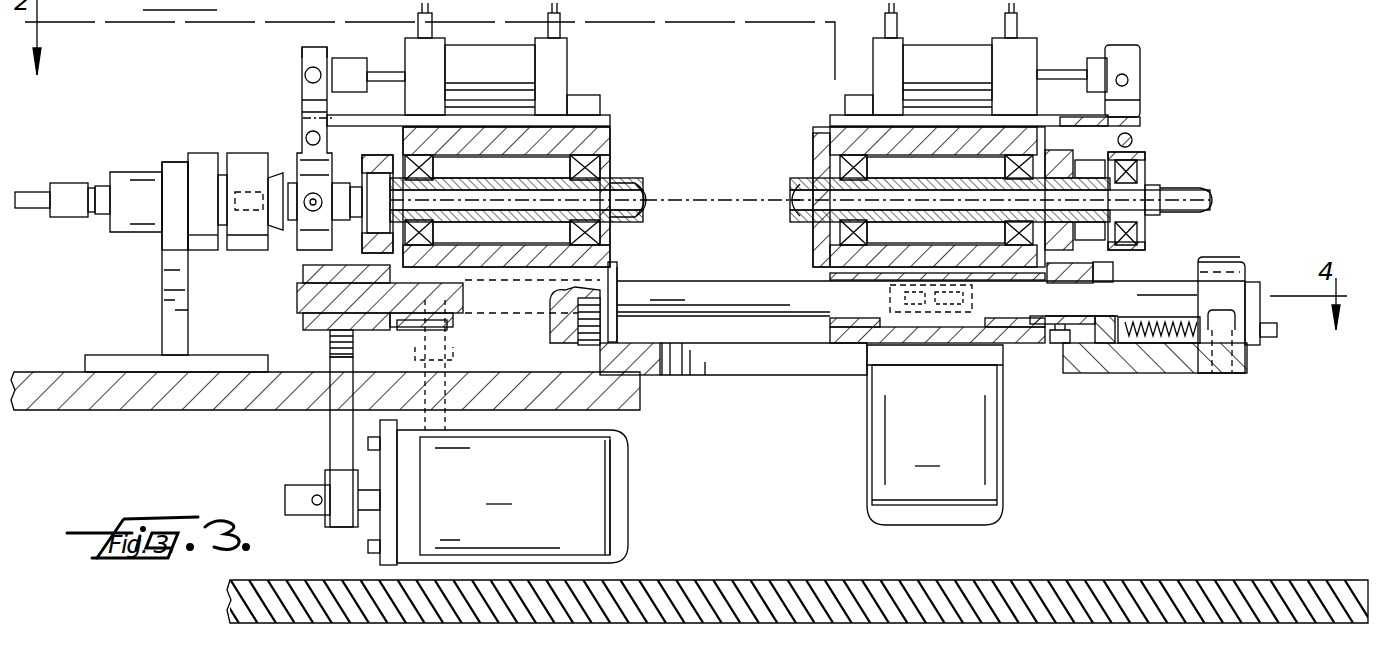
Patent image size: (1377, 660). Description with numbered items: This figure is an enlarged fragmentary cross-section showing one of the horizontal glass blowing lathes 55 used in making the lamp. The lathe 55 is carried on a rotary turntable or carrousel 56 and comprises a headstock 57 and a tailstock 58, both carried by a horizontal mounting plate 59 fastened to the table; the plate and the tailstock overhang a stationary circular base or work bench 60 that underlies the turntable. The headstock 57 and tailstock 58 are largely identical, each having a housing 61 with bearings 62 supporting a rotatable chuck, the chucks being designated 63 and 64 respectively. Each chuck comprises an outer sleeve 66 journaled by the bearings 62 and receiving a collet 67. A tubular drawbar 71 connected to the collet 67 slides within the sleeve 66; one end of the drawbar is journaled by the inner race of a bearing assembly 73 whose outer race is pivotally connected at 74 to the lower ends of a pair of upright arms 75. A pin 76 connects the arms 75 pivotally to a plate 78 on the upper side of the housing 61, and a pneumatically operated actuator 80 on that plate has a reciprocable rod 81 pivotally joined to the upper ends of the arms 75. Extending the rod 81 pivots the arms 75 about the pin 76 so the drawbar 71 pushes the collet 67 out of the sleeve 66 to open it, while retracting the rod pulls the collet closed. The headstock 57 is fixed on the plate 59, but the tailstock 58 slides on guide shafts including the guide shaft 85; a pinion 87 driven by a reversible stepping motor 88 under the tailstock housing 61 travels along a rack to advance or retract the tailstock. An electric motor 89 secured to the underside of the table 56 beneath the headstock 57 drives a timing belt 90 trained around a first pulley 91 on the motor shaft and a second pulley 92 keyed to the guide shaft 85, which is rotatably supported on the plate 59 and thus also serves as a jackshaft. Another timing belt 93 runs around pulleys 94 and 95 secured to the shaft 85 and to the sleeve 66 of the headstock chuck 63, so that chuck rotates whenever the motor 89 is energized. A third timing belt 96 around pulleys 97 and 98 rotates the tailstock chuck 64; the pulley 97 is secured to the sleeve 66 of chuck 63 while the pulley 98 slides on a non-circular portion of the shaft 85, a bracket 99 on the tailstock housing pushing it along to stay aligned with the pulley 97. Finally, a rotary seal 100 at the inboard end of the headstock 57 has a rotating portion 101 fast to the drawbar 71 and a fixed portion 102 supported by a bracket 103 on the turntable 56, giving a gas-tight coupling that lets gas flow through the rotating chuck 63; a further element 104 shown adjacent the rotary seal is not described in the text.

The horizontal glass blowing lathe 55 is at (1166, 60).
The rotary turntable 56 is at (118, 412).
The headstock 57 is at (620, 116).
The tailstock 58 is at (824, 130).
The mounting plate 59 is at (660, 378).
The work bench 60 is at (692, 583).
The housing 61 is at (548, 130).
The bearings 62 is at (420, 155).
The chuck of the headstock 63 is at (490, 160).
The chuck of the tailstock 64 is at (957, 165).
The outer sleeve 66 is at (530, 228).
The collet 67 is at (646, 195).
The tubular drawbar 71 is at (480, 228).
The bearing assembly 73 is at (300, 238).
The pivotal connection 74 is at (311, 194).
The upright arms 75 is at (298, 85).
The pin 76 is at (305, 134).
The plate 78 is at (377, 115).
The pneumatically operated actuator 80 is at (485, 45).
The reciprocable rod 81 is at (392, 62).
The guide shaft 85 is at (688, 290).
The pinion 87 is at (955, 314).
The reversible stepping motor 88 is at (935, 435).
The electric motor 89 is at (498, 492).
The timing belt 90 is at (330, 442).
The first pulley 91 is at (325, 482).
The second pulley 92 is at (303, 320).
The timing belt 93 is at (330, 347).
The pulley 94 is at (445, 345).
The pulley 95 is at (370, 165).
The third timing belt 96 is at (1062, 345).
The pulley 97 is at (1085, 238).
The pulley 98 is at (1100, 345).
The bracket 99 is at (1130, 345).
The rotary seal 100 is at (172, 146).
The rotating portion 101 is at (255, 250).
The fixed portion 102 is at (198, 155).
The bracket 103 is at (162, 306).
The shaft end 104 is at (28, 215).